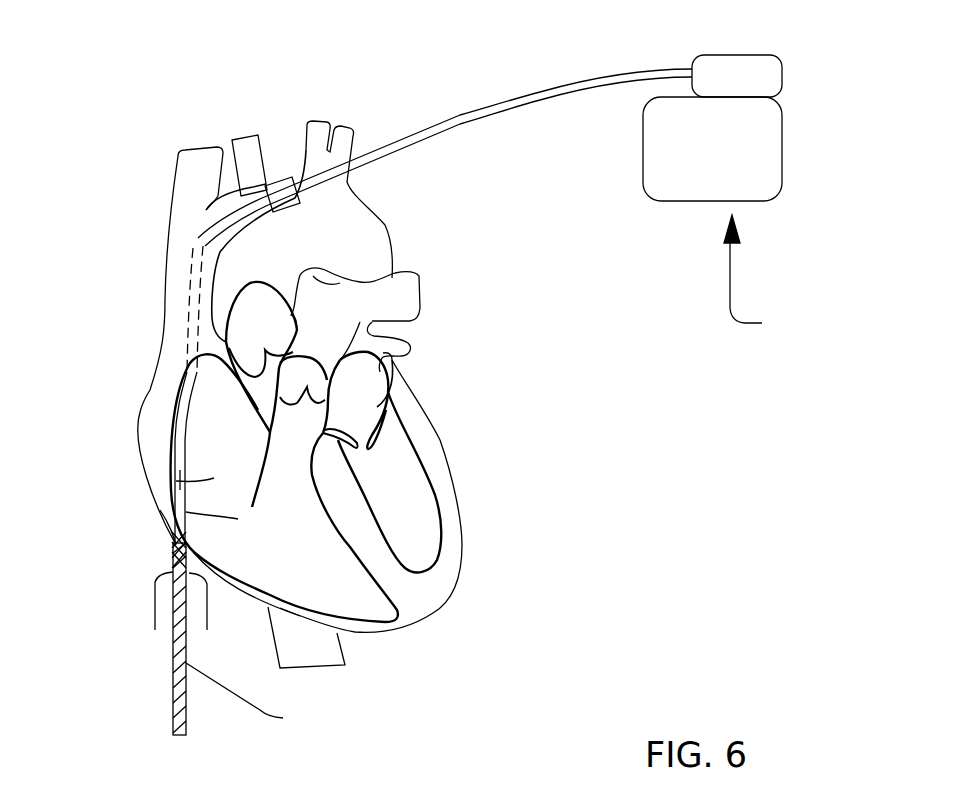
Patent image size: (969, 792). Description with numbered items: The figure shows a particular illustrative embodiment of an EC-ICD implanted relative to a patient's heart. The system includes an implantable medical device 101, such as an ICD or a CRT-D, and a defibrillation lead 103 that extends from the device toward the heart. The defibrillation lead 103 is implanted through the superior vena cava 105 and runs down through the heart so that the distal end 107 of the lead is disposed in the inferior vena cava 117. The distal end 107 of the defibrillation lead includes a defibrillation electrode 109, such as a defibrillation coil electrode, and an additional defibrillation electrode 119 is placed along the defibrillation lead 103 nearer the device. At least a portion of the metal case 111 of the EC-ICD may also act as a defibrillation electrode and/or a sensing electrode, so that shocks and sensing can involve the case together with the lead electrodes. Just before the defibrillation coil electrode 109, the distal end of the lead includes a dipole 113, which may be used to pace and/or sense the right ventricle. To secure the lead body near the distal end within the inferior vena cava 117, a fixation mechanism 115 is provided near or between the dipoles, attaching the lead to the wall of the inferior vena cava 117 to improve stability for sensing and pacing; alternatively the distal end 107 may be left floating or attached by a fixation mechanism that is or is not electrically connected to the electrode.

The implantable medical device 101 is at (763, 278).
The defibrillation lead 103 is at (628, 69).
The superior vena cava 105 is at (167, 232).
The distal end 107 is at (173, 735).
The defibrillation electrode 109 is at (255, 699).
The metal case 111 is at (640, 183).
The dipole 113 is at (173, 543).
The fixation mechanism 115 is at (173, 548).
The inferior vena cava 117 is at (155, 580).
The additional defibrillation electrode 119 is at (240, 138).